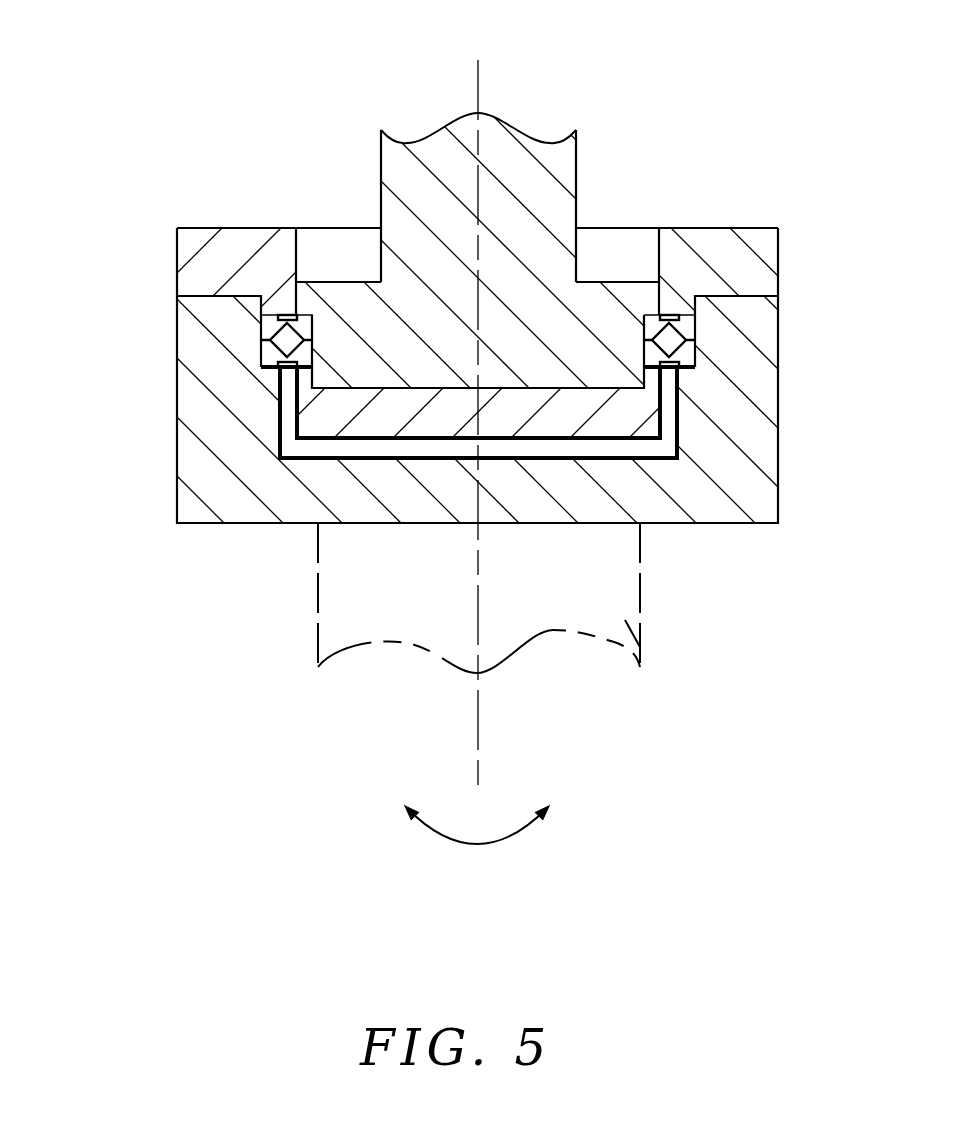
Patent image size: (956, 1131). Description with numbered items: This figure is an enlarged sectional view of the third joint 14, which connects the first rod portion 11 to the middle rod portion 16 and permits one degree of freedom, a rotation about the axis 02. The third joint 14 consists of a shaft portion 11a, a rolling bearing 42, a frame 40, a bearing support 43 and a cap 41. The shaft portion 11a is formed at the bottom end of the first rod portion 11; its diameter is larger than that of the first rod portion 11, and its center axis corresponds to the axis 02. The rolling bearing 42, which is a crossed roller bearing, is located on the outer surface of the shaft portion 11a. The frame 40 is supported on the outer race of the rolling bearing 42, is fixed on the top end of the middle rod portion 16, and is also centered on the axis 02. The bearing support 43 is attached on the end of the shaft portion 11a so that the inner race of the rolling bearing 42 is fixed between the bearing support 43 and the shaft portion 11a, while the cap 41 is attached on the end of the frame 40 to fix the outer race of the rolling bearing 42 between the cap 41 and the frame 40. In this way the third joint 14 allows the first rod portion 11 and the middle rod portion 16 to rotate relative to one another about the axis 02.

The third joint 14 is at (695, 108).
The first rod portion 11 is at (403, 180).
The shaft portion 11a is at (617, 297).
The cap 41 is at (208, 268).
The frame 40 is at (210, 495).
The rolling bearing 42 is at (663, 344).
The bearing support 43 is at (622, 427).
The middle rod portion 16 is at (645, 650).
The axis O2 02 is at (478, 738).